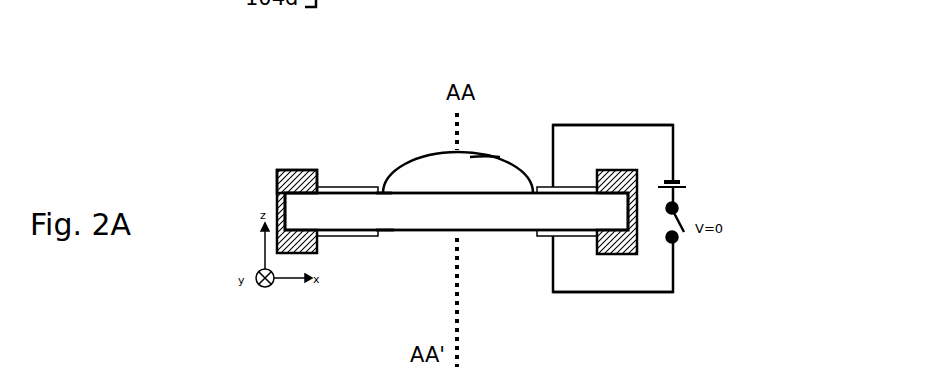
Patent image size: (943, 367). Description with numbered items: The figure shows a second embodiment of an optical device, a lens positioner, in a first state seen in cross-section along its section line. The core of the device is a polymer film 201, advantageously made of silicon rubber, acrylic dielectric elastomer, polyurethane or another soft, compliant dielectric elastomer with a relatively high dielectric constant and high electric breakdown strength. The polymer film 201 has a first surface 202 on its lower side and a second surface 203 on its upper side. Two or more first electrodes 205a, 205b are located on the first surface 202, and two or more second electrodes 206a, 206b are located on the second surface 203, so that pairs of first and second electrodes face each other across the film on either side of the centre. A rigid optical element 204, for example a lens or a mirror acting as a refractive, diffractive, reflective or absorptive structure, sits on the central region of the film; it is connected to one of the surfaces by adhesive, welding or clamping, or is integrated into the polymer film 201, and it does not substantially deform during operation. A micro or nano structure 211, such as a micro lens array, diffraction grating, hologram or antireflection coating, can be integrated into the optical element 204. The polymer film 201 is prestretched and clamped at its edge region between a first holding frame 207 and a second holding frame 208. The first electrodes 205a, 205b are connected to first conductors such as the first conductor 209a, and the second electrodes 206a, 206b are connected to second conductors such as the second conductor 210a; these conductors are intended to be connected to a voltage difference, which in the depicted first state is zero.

The polymer film 201 is at (455, 210).
The first surface 202 is at (385, 235).
The second surface 203 is at (384, 190).
The rigid optical element 204 is at (423, 172).
The first electrode 205a is at (545, 236).
The first electrode 205b is at (333, 236).
The second electrode 206a is at (542, 187).
The second electrode 206b is at (340, 187).
The first holding frame 207 is at (278, 198).
The second holding frame 208 is at (302, 172).
The first conductor 209a is at (610, 292).
The second conductor 210a is at (610, 125).
The micro or nano structure 211 is at (485, 153).